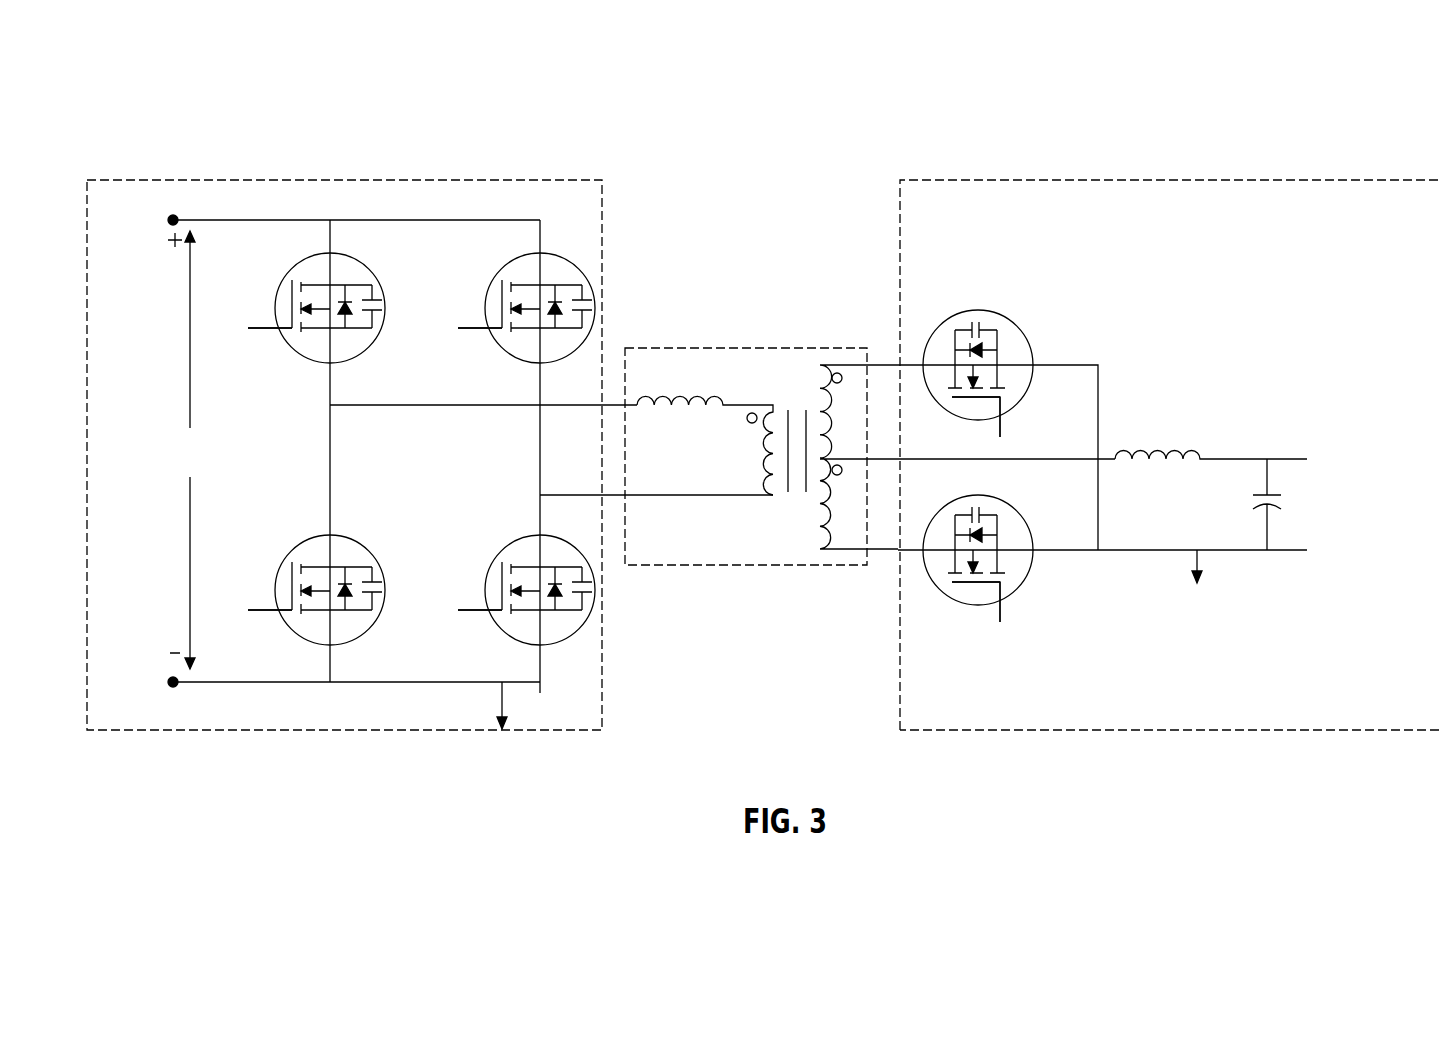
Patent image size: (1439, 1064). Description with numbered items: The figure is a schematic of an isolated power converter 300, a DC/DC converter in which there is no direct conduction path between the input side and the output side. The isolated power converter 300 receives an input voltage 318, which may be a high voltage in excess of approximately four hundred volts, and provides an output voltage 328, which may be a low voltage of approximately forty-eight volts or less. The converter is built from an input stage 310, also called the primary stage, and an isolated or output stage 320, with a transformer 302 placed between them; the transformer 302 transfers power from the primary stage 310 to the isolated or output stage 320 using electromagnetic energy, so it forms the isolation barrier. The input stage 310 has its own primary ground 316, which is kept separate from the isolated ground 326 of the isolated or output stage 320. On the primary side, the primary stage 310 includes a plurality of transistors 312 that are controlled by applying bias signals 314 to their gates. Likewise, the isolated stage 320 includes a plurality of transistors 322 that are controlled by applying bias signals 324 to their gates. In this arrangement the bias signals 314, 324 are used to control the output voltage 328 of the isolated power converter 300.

The isolated power converter 300 is at (172, 80).
The input stage 310 is at (525, 178).
The transistors 312 is at (283, 266).
The bias signals 314 is at (257, 335).
The primary ground 316 is at (493, 690).
The input voltage 318 is at (128, 435).
The transformer 302 is at (733, 345).
The isolated or output stage 320 is at (1365, 178).
The transistors 322 is at (1016, 315).
The bias signals 324 is at (1008, 422).
The isolated ground 326 is at (1204, 555).
The output voltage 328 is at (1293, 459).